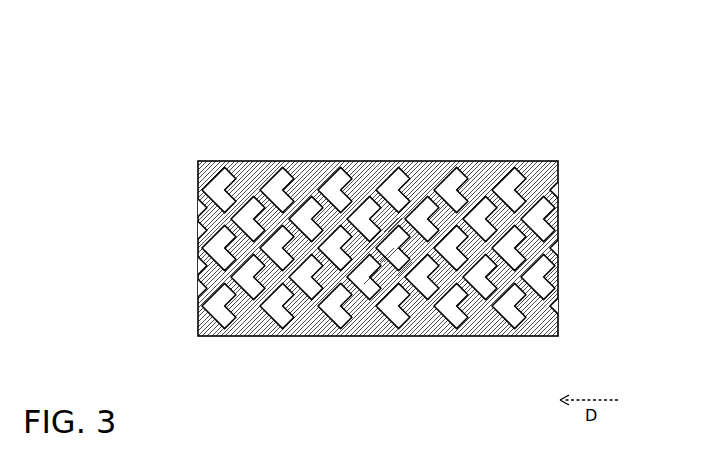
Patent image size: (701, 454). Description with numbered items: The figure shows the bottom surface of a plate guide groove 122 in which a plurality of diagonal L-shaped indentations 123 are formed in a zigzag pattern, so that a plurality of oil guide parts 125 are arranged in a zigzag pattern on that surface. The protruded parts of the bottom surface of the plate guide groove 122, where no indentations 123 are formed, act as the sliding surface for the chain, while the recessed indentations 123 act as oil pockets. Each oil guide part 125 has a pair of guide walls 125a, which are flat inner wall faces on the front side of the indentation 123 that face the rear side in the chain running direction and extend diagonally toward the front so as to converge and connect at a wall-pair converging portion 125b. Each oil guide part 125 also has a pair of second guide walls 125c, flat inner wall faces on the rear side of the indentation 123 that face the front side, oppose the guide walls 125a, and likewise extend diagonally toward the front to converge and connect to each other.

The plate guide groove 122 is at (362, 184).
The L-shaped indentation 123 is at (534, 217).
The oil guide part 125 is at (536, 152).
The guide wall 125a is at (388, 252).
The wall-pair converging portion 125b is at (373, 242).
The second guide wall 125c is at (392, 226).